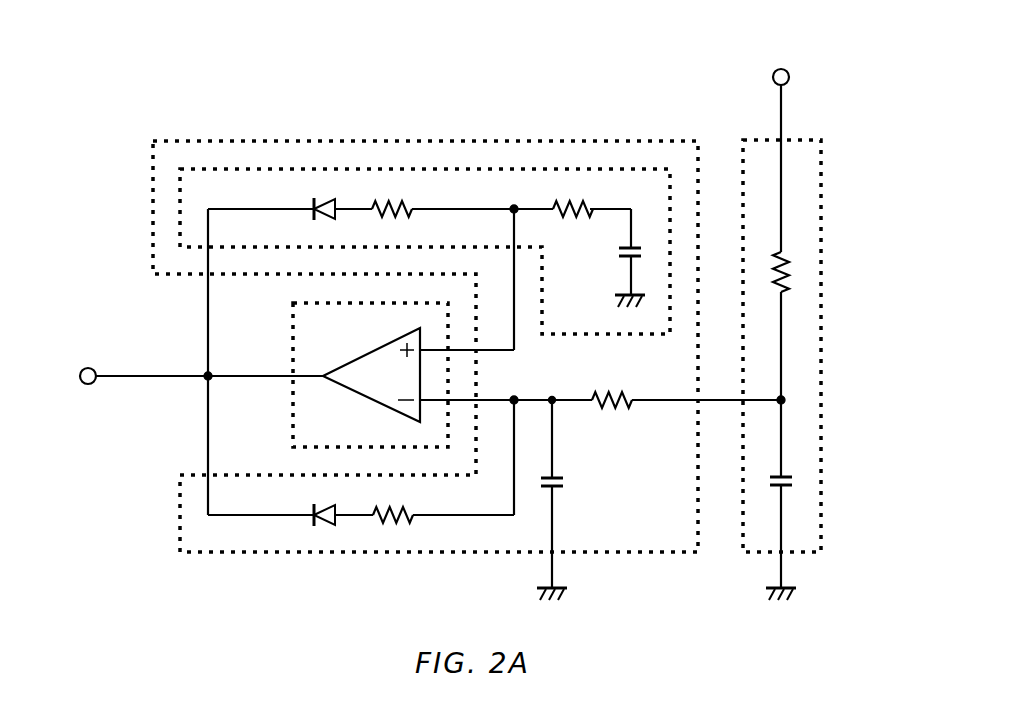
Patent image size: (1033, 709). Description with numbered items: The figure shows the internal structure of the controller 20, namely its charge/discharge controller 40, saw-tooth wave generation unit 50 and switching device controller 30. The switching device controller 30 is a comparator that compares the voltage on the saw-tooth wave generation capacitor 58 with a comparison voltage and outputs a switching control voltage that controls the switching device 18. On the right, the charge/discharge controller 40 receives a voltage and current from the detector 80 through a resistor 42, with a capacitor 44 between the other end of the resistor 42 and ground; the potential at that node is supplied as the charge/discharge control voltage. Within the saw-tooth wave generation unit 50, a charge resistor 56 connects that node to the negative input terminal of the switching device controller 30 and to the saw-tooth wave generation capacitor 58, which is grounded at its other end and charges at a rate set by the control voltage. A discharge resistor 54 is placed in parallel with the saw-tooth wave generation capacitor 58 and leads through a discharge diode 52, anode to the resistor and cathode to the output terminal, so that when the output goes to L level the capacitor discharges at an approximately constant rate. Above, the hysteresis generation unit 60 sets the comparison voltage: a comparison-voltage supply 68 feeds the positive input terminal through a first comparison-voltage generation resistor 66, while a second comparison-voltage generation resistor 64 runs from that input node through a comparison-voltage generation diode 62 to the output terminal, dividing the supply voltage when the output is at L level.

The controller 20 is at (872, 18).
The switching device 18 is at (73, 377).
The detector 80 is at (780, 63).
The switching device controller 30 is at (292, 336).
The charge/discharge controller 40 is at (821, 187).
The resistor 42 is at (790, 268).
The capacitor 44 is at (795, 485).
The saw-tooth wave generation unit 50 is at (228, 553).
The discharge diode 52 is at (326, 522).
The discharge resistor 54 is at (395, 525).
The charge resistor 56 is at (614, 412).
The saw-tooth wave generation capacitor 58 is at (565, 486).
The hysteresis generation unit 60 is at (624, 169).
The comparison-voltage generation diode 62 is at (323, 196).
The second comparison-voltage generation resistor 64 is at (400, 198).
The first comparison-voltage generation resistor 66 is at (568, 198).
The comparison-voltage supply 68 is at (632, 256).